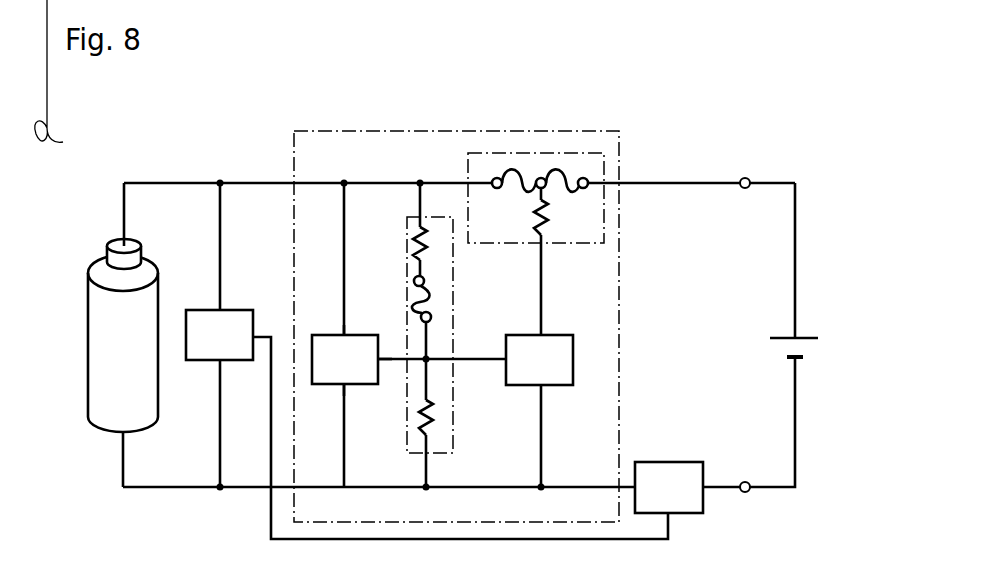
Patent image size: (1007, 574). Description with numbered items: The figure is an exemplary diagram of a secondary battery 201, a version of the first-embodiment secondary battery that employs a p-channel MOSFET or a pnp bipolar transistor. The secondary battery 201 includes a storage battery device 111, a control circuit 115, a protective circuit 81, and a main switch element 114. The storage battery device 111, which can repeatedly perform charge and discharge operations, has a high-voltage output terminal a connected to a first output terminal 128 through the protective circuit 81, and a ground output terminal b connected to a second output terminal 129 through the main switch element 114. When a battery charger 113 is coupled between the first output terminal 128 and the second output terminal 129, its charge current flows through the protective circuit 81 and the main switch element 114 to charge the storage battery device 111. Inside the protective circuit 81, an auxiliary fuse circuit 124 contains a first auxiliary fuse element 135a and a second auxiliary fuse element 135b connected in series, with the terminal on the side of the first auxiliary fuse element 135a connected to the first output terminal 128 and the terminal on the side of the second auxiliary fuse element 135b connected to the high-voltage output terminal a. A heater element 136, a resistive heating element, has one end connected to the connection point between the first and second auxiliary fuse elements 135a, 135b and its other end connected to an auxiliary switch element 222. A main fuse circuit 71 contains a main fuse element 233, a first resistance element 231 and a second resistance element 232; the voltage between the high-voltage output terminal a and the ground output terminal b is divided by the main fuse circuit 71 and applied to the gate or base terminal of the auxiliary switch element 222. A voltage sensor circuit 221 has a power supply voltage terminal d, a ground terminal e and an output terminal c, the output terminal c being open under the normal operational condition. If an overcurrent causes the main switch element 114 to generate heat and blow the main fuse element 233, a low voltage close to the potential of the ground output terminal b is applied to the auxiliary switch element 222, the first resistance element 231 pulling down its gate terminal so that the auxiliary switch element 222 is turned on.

The secondary battery 201 is at (197, 111).
The protection circuit 81 is at (404, 128).
The main fuse circuit 71 is at (454, 276).
The auxiliary fuse circuit 124 is at (606, 160).
The storage battery device 111 is at (100, 256).
The high-voltage output terminal a is at (128, 243).
The ground output terminal b is at (126, 437).
The control circuit 115 is at (196, 361).
The voltage sensor circuit 221 is at (320, 333).
The power supply voltage terminal d is at (348, 334).
The ground terminal e is at (341, 389).
The output terminal c is at (378, 364).
The first resistance element 231 is at (418, 246).
The main fuse element 233 is at (433, 300).
The second resistance element 232 is at (436, 418).
The auxiliary switch element 222 is at (575, 352).
The second auxiliary fuse element 135b is at (503, 163).
The first auxiliary fuse element 135a is at (566, 174).
The heater element 136 is at (556, 214).
The first output terminal 128 is at (745, 178).
The second output terminal 129 is at (745, 493).
The battery charger 113 is at (780, 336).
The main switch element 114 is at (672, 462).